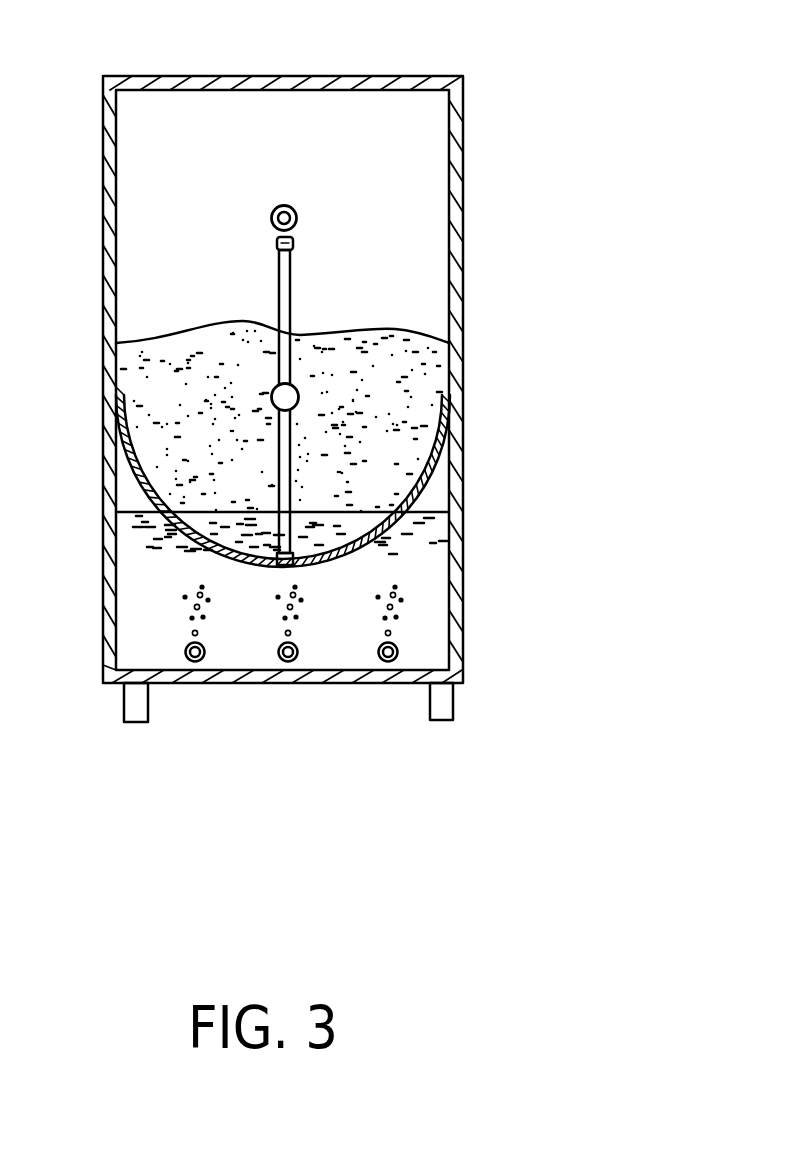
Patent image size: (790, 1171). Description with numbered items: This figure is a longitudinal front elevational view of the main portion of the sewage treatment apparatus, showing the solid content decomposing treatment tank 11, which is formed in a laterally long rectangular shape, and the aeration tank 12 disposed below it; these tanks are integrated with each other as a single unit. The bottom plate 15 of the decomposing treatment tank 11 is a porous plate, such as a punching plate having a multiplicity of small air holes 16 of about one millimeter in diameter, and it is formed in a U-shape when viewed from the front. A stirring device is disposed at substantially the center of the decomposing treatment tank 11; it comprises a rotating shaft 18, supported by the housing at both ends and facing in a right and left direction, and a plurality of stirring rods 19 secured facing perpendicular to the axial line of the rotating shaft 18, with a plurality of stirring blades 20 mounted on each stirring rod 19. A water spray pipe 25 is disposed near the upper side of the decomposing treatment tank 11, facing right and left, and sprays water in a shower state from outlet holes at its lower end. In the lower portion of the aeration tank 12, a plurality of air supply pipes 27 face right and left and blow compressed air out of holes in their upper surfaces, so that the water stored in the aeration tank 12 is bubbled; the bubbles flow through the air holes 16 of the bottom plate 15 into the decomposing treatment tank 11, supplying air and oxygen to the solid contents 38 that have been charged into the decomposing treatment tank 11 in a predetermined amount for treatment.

The solid content decomposing treatment tank 11 is at (432, 153).
The aeration tank 12 is at (430, 617).
The bottom plate 15 is at (460, 500).
The air holes 16 is at (395, 478).
The rotating shaft 18 is at (277, 393).
The stirring rods 19 is at (277, 280).
The stirring blades 20 is at (292, 242).
The water spray pipe 25 is at (295, 213).
The air supply pipes 27 is at (393, 658).
The solid contents 38 is at (395, 375).